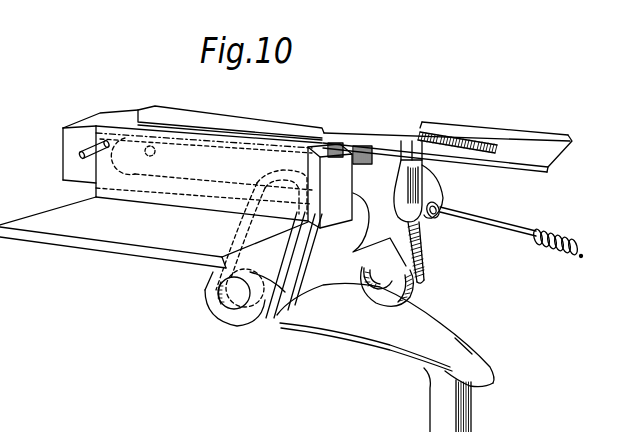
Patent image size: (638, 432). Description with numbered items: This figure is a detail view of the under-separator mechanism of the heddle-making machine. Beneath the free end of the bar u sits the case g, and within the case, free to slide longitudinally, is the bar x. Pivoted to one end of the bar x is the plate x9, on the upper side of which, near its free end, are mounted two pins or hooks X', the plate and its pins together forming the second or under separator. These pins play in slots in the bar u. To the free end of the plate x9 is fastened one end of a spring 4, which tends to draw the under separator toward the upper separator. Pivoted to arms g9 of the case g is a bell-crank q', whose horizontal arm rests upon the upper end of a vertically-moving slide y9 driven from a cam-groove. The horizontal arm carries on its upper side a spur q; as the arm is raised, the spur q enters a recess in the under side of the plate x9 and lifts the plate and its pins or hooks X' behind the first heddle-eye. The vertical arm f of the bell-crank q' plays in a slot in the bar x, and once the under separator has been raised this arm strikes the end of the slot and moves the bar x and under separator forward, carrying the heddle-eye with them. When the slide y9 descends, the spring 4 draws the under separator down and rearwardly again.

The bar x is at (68, 139).
The case g is at (210, 163).
The vertical arm of the bell-crank f is at (253, 190).
The bar u is at (532, 145).
The pins or hooks X' is at (431, 181).
The plate x9 is at (425, 225).
The spur q is at (399, 286).
The arms of the case g9 is at (178, 292).
The bell-crank q' is at (385, 334).
The spring 4 is at (577, 242).
The vertically-moving slide y9 is at (463, 400).